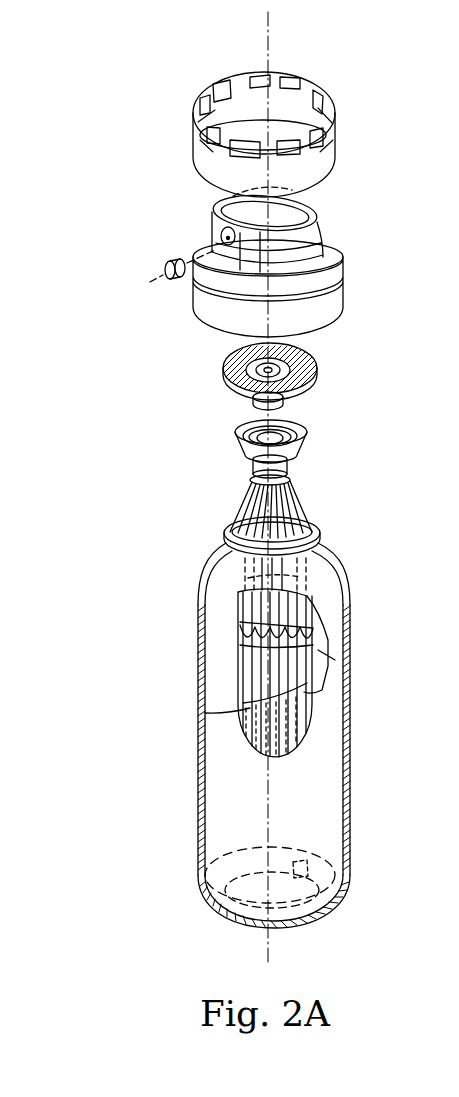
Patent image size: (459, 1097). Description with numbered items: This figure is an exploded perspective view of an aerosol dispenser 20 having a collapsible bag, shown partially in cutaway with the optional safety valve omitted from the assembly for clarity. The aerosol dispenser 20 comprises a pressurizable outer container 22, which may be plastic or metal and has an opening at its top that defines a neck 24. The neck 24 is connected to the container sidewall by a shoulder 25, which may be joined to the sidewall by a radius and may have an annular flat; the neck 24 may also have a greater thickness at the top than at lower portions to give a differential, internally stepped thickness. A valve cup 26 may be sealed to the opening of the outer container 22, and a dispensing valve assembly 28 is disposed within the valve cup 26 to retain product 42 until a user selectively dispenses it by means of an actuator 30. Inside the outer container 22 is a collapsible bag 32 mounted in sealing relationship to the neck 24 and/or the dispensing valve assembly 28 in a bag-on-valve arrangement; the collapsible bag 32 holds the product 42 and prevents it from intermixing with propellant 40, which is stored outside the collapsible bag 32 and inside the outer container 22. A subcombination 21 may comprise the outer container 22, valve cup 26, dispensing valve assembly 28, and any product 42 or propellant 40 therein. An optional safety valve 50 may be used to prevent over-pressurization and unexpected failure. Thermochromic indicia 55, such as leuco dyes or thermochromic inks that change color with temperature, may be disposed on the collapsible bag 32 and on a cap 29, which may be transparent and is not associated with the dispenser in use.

The aerosol dispenser 20 is at (160, 659).
The subcombination 21 is at (338, 368).
The outer container 22 is at (220, 818).
The neck 24 is at (236, 528).
The shoulder 25 is at (212, 556).
The valve cup 26 is at (242, 431).
The dispensing valve assembly 28 is at (230, 356).
The cap 29 is at (207, 168).
The actuator 30 is at (355, 332).
The collapsible bag 32 is at (258, 661).
The propellant 40 is at (247, 797).
The product 42 is at (333, 660).
The safety valve 50 is at (305, 495).
The thermochromic indicia 55 is at (268, 73).